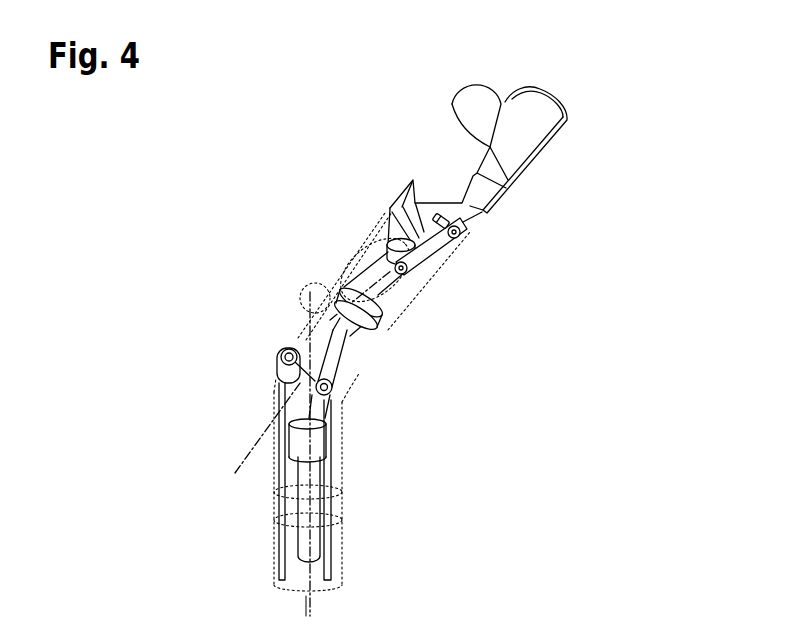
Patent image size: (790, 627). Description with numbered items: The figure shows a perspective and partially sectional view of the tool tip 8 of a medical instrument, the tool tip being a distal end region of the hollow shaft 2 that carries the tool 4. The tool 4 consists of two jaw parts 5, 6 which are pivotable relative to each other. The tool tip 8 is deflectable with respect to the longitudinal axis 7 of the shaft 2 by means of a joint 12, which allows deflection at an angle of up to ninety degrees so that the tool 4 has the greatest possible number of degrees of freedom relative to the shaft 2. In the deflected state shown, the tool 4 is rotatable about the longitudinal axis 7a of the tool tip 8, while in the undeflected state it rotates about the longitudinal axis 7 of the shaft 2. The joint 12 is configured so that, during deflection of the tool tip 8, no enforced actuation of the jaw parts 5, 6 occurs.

The hollow shaft 2 is at (301, 577).
The tool 4 is at (547, 185).
The jaw part 5 is at (447, 126).
The jaw part 6 is at (560, 118).
The longitudinal axis 7 is at (313, 604).
The longitudinal axis of the tool tip 7a is at (236, 455).
The tool tip 8 is at (338, 193).
The joint 12 is at (234, 366).